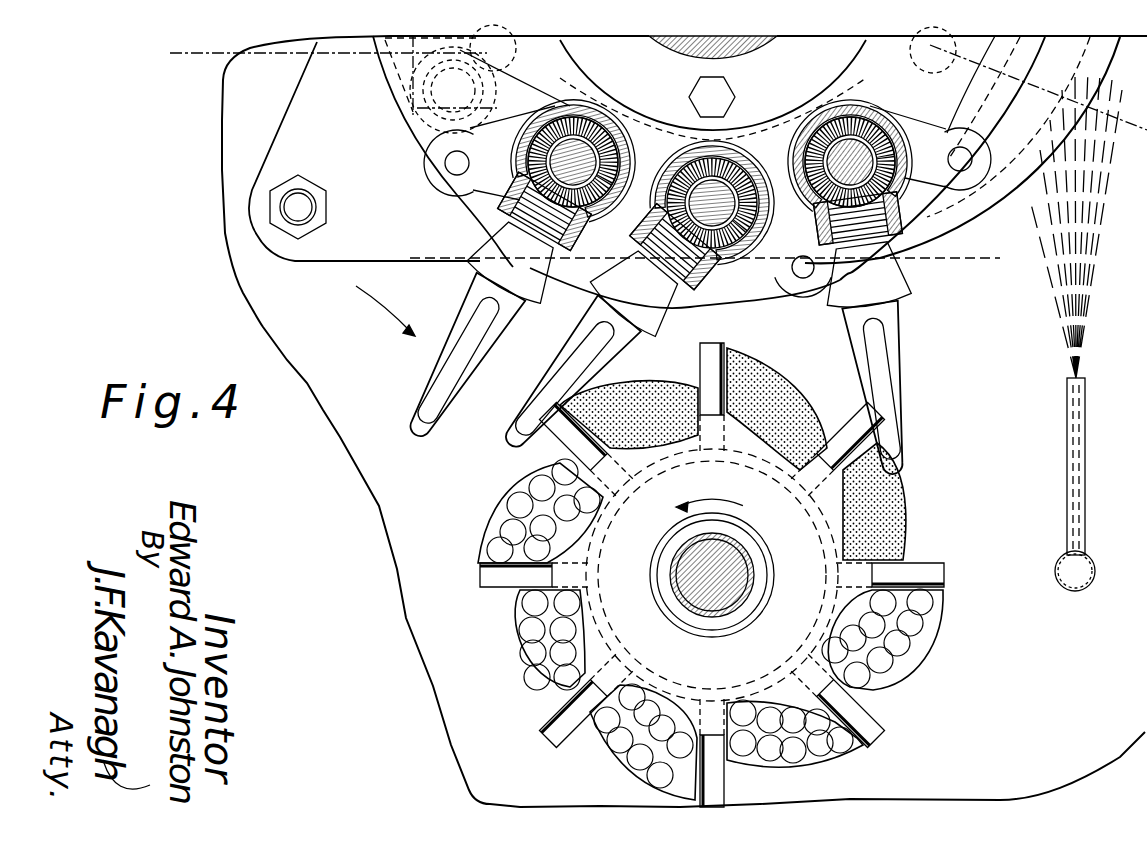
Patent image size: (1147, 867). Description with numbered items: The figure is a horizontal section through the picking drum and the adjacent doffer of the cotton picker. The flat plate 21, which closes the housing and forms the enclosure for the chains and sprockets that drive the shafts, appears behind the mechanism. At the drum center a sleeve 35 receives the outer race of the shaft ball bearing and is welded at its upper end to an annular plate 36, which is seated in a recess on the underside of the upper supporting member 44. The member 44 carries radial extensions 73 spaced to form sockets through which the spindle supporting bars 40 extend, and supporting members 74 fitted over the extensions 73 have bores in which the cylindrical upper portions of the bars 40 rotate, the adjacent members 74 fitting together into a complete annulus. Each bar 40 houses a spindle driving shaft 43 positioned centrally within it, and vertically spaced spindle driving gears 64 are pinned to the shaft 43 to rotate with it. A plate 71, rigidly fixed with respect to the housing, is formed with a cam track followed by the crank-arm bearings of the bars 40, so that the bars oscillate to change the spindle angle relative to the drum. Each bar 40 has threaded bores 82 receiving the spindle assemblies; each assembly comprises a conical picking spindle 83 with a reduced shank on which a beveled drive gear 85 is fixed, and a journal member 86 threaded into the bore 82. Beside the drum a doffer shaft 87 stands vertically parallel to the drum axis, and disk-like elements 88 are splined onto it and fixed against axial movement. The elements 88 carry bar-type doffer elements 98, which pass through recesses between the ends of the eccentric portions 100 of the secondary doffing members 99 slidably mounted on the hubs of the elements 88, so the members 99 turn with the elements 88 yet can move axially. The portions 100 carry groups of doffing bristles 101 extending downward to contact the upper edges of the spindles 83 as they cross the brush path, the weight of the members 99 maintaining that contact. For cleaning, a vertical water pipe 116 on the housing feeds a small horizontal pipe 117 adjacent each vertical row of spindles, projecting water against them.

The flat plate 21 is at (228, 127).
The sleeve 35 is at (738, 50).
The annular plate 36 is at (672, 76).
The spindle supporting bars 40 is at (463, 200).
The spindle driving shafts 43 is at (522, 140).
The upper supporting member 44 is at (447, 182).
The spindle driving gears 64 is at (585, 118).
The plate 71 is at (300, 94).
The radial extensions 73 is at (433, 153).
The supporting members 74 is at (955, 217).
The threaded bores 82 is at (500, 223).
The conical picking spindle 83 is at (577, 328).
The beveled drive gear 85 is at (900, 186).
The journal member 86 is at (903, 260).
The doffer shaft 87 is at (722, 553).
The disk-like elements 88 is at (920, 563).
The bar-type doffer elements 98 is at (753, 560).
The secondary doffing members 99 is at (772, 580).
The eccentric portions 100 is at (620, 385).
The doffing bristles 101 is at (790, 400).
The vertical water pipes 116 is at (1090, 558).
The horizontal pipe 117 is at (1073, 402).